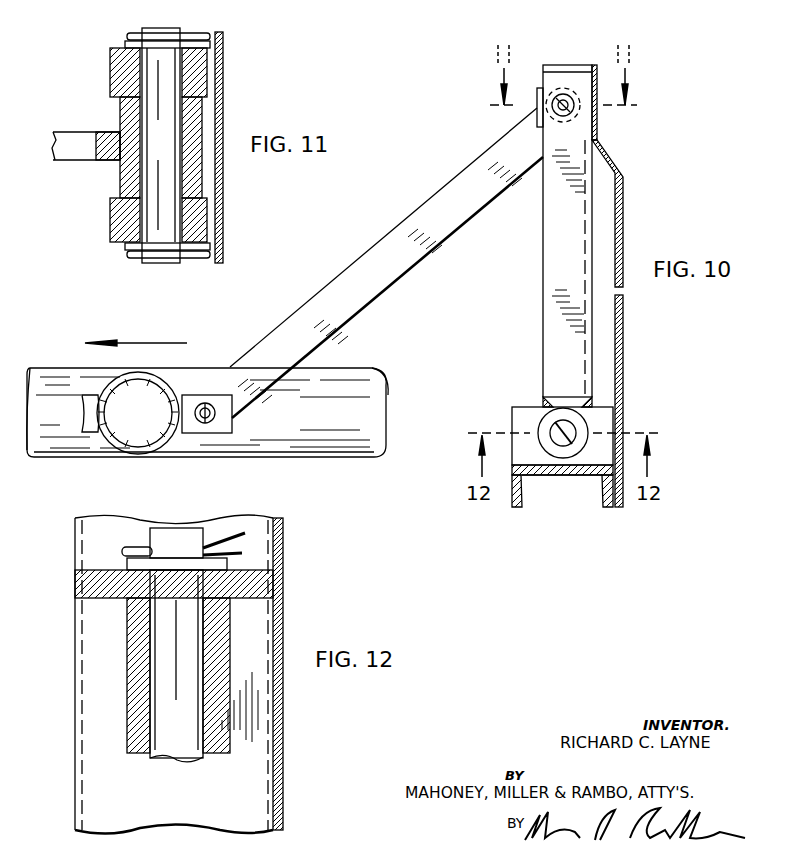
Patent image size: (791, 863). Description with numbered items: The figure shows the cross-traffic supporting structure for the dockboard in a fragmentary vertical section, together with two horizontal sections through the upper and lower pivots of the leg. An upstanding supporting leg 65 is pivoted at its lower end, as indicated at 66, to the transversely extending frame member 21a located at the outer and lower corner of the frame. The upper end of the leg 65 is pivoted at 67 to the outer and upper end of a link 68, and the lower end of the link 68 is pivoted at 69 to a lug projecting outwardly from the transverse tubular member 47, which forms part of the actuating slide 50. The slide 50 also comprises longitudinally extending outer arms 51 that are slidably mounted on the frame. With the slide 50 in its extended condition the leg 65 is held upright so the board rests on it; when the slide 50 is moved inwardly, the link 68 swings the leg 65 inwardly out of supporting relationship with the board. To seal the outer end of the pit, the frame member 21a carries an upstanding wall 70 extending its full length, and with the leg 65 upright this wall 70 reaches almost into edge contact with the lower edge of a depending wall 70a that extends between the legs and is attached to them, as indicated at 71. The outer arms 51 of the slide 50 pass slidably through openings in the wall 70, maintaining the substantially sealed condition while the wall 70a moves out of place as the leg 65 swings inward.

In FIG. 10, the transversely extending frame member 21a is at (570, 470).
In FIG. 12, the transversely extending frame member 21a is at (75, 694).
In FIG. 10, the transverse tubular member 47 is at (139, 374).
In FIG. 10, the actuating slide 50 is at (318, 398).
In FIG. 10, the outer arms 51 is at (333, 453).
In FIG. 11, the supporting legs 65 is at (208, 181).
In FIG. 10, the supporting legs 65 is at (543, 236).
In FIG. 10, the leg lower pivot 66 is at (572, 432).
In FIG. 12, the leg lower pivot 66 is at (180, 740).
In FIG. 11, the leg upper pivot 67 is at (172, 130).
In FIG. 10, the leg upper pivot 67 is at (563, 94).
In FIG. 11, the link 68 is at (78, 152).
In FIG. 10, the link 68 is at (468, 172).
In FIG. 10, the link lower pivot 69 is at (205, 400).
In FIG. 10, the upstanding wall 70 is at (623, 343).
In FIG. 12, the upstanding wall 70 is at (284, 766).
In FIG. 11, the depending wall 70a is at (222, 241).
In FIG. 10, the depending wall 70a is at (621, 178).
In FIG. 10, the wall attachment 71 is at (596, 122).